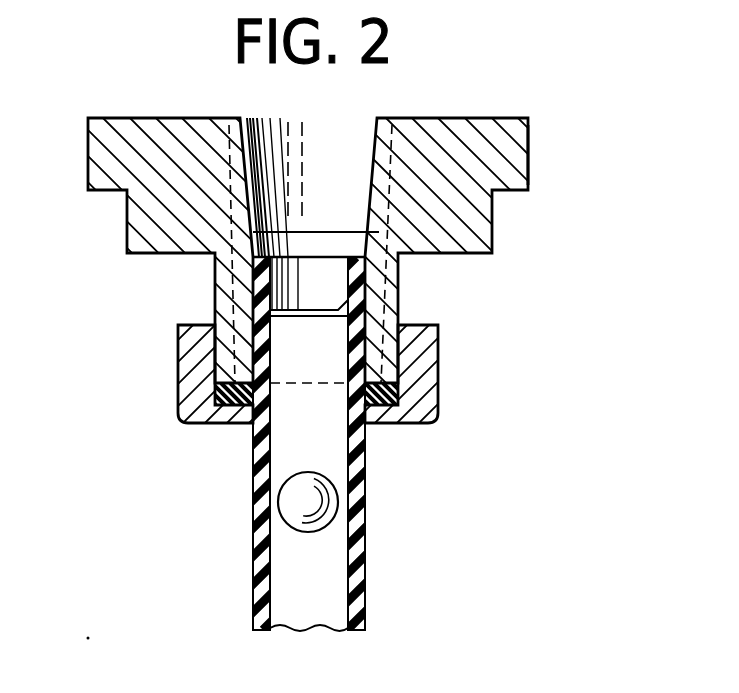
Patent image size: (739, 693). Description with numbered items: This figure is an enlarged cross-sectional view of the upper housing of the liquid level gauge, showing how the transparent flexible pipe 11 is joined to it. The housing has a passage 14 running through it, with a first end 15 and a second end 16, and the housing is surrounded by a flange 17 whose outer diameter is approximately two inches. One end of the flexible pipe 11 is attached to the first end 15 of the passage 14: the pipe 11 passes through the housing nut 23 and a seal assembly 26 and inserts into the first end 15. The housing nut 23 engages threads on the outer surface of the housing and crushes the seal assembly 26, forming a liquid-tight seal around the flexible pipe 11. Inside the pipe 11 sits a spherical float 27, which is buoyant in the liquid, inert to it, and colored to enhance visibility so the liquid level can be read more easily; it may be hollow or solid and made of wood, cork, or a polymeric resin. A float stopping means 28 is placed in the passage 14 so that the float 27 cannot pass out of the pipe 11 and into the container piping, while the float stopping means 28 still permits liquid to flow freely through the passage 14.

The flexible pipe 11 is at (366, 575).
The passage 14 is at (286, 203).
The first end 15 is at (315, 383).
The second end 16 is at (326, 126).
The flange 17 is at (528, 160).
The housing nut 23 is at (440, 385).
The seal assembly 26 is at (216, 397).
The spherical float 27 is at (283, 503).
The float stopping means 28 is at (304, 318).